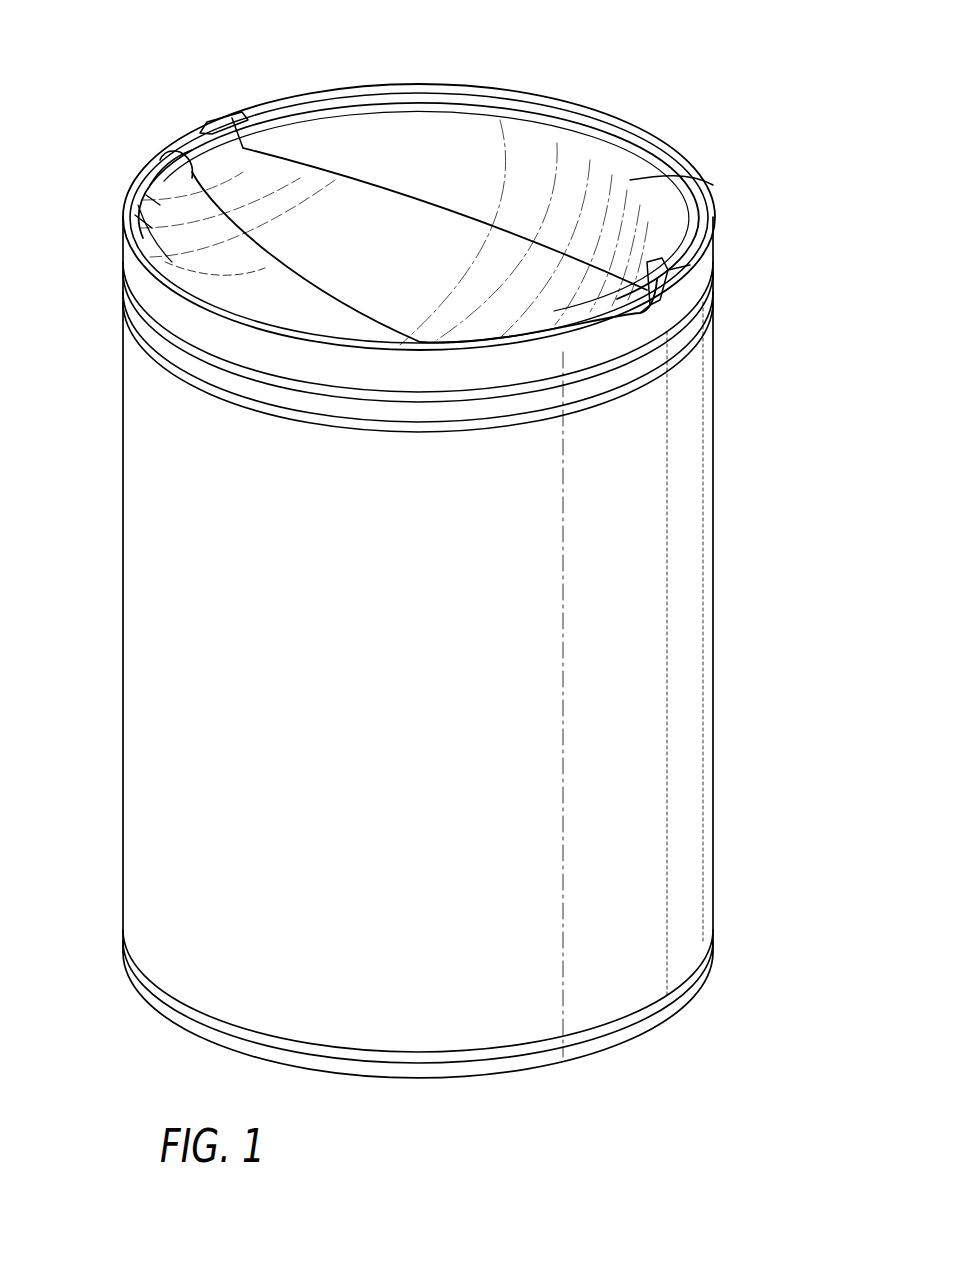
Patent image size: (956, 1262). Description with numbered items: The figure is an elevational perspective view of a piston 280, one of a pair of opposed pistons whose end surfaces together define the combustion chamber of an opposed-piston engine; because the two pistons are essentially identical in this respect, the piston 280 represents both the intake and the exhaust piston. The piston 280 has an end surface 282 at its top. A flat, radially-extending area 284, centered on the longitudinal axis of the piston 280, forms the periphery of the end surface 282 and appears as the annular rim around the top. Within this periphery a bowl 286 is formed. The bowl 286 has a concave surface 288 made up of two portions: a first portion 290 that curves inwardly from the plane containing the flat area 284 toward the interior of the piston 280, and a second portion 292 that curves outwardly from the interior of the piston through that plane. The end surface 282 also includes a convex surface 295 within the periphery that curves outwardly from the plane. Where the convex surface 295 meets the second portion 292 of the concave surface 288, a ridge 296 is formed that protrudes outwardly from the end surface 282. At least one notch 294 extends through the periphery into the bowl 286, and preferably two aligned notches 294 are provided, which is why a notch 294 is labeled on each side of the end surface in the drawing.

The piston 280 is at (745, 529).
The end surface 282 is at (189, 64).
The flat, radially-extending area 284 is at (635, 137).
The bowl 286 is at (153, 190).
The concave surface 288 is at (152, 218).
The first portion 290 is at (202, 281).
The second portion 292 is at (302, 130).
The notch 294 is at (183, 148).
The convex surface 295 is at (548, 122).
The ridge 296 is at (630, 180).